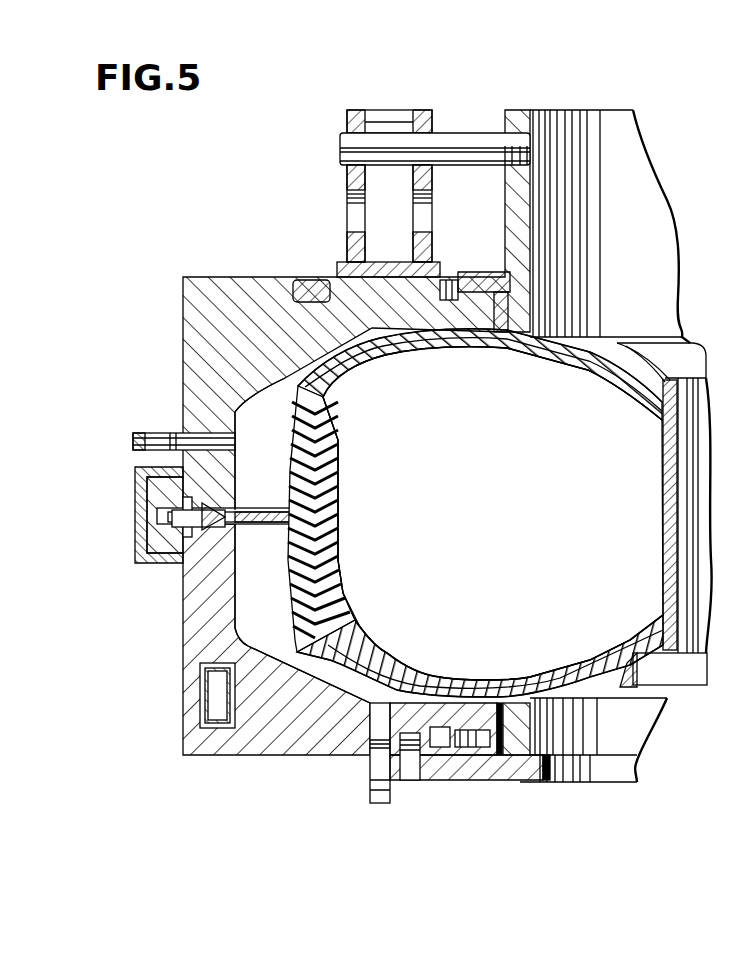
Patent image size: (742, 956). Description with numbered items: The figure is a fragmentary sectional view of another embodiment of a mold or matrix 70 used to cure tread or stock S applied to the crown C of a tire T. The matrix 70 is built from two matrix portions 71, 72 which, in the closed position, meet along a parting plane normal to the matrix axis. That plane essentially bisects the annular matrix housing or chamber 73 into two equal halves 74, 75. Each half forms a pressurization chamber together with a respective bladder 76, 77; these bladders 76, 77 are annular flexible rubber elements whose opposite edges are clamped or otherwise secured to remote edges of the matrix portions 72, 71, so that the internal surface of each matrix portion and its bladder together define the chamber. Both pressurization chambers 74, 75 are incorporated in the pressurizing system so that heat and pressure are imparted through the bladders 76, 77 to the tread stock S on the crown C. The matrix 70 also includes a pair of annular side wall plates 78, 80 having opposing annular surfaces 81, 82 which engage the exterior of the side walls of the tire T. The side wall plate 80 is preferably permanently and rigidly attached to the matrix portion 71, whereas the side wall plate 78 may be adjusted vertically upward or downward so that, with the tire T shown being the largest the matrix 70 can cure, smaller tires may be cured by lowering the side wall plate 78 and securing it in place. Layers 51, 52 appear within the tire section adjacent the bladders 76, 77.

The matrix 70 is at (164, 630).
The matrix portion 71 is at (258, 757).
The matrix portion 72 is at (238, 292).
The annular matrix housing 73 is at (338, 447).
The pressurization chamber 74 is at (290, 462).
The pressurization chamber 75 is at (262, 599).
The bladder 76 is at (393, 360).
The bladder 77 is at (377, 660).
The side wall plate 78 is at (627, 157).
The side wall plate 80 is at (632, 718).
The annular surface 81 is at (523, 353).
The annular surface 82 is at (525, 690).
The upper ply 51 is at (480, 353).
The lower ply 52 is at (463, 685).
The tire T is at (595, 357).
The tread or stock S is at (337, 548).
The crown C is at (337, 507).